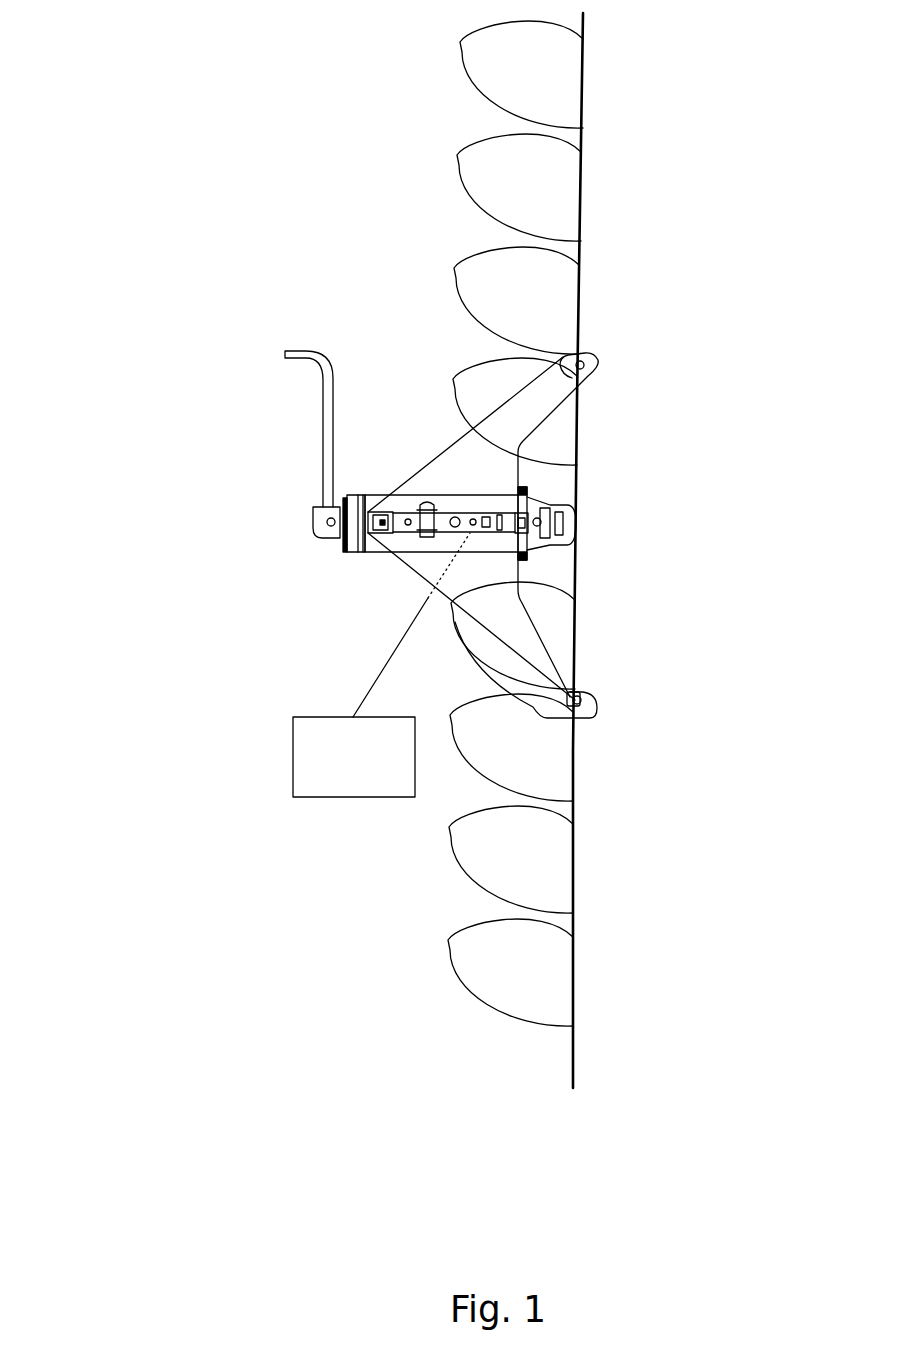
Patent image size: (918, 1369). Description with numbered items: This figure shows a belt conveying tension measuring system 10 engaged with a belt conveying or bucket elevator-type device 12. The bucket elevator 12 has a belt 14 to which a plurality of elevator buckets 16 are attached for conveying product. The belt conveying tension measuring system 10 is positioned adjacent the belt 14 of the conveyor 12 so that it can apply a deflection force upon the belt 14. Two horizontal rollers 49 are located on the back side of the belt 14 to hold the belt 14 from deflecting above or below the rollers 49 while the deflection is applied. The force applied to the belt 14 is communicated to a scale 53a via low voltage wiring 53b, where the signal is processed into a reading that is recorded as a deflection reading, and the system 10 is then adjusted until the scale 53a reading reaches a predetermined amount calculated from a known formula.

The belt conveying tension measuring system 10 is at (252, 503).
The bucket elevator 12 is at (420, 103).
The belt 14 is at (582, 200).
The elevator buckets 16 is at (458, 268).
The horizontal rollers 49 is at (588, 357).
The scale 53a is at (297, 732).
The low voltage wiring 53b is at (374, 684).